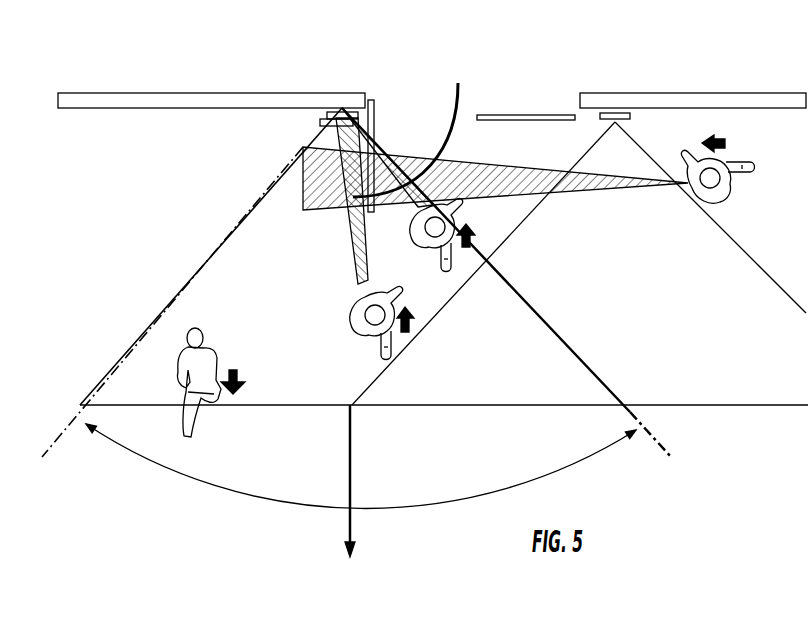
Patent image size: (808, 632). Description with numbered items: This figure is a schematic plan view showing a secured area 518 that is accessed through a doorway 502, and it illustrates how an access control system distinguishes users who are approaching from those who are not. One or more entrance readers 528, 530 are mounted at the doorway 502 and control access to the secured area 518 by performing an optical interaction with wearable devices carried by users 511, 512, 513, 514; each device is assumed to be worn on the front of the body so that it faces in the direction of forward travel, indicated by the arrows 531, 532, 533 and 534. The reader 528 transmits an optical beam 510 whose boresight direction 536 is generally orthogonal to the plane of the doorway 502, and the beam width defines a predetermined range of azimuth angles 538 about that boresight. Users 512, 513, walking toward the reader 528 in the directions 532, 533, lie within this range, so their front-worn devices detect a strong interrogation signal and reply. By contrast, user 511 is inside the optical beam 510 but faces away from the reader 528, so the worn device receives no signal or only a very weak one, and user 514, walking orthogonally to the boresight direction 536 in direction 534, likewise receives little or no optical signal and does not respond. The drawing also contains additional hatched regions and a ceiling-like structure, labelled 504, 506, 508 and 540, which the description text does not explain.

The doorway 502 is at (518, 84).
The light beam 504 is at (504, 163).
The light beam 506 is at (347, 226).
The light beam 508 is at (420, 207).
The optical beam 510 is at (200, 237).
The user 511 is at (199, 382).
The user 512 is at (349, 366).
The user 513 is at (437, 275).
The user 514 is at (764, 208).
The secured area 518 is at (447, 53).
The entrance reader 528 is at (326, 115).
The entrance reader 530 is at (627, 121).
The arrow 531 is at (233, 369).
The arrow 532 is at (417, 326).
The arrow 533 is at (478, 231).
The arrow 534 is at (724, 143).
The boresight direction 536 is at (337, 485).
The predetermined range of azimuth angles 538 is at (505, 487).
The ceiling 540 is at (217, 93).